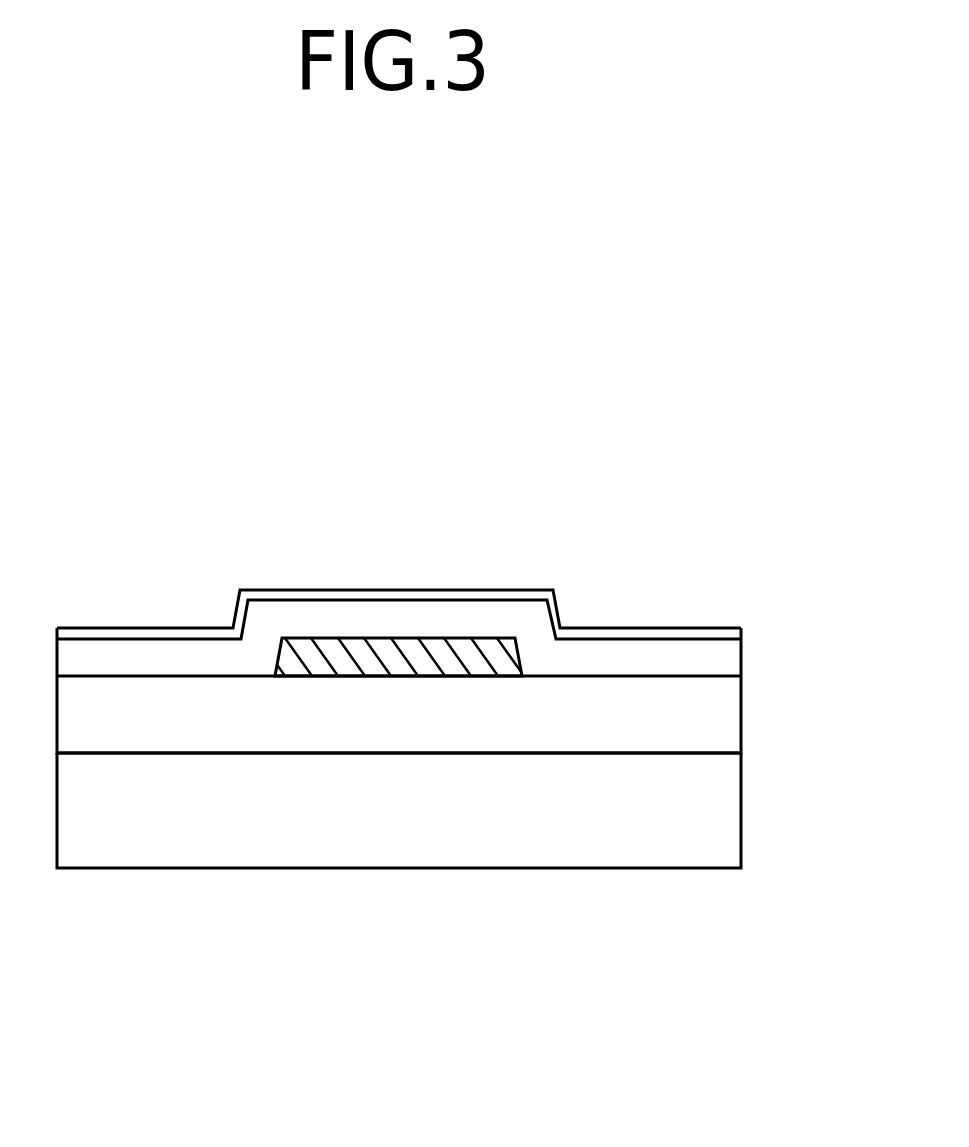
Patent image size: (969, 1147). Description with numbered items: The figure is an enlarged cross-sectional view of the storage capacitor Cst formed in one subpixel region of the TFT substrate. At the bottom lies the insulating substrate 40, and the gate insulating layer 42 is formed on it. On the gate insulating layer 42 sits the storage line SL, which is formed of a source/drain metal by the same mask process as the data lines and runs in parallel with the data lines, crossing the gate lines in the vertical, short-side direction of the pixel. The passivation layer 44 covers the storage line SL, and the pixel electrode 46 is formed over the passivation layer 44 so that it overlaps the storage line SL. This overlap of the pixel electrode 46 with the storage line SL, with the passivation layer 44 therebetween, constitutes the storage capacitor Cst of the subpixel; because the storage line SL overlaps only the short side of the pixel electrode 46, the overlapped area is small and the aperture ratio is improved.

The insulating substrate 40 is at (738, 813).
The gate insulating layer 42 is at (738, 715).
The passivation layer 44 is at (738, 653).
The pixel electrode 46 is at (649, 627).
The storage line SL is at (398, 675).
The storage capacitor Cst is at (397, 579).